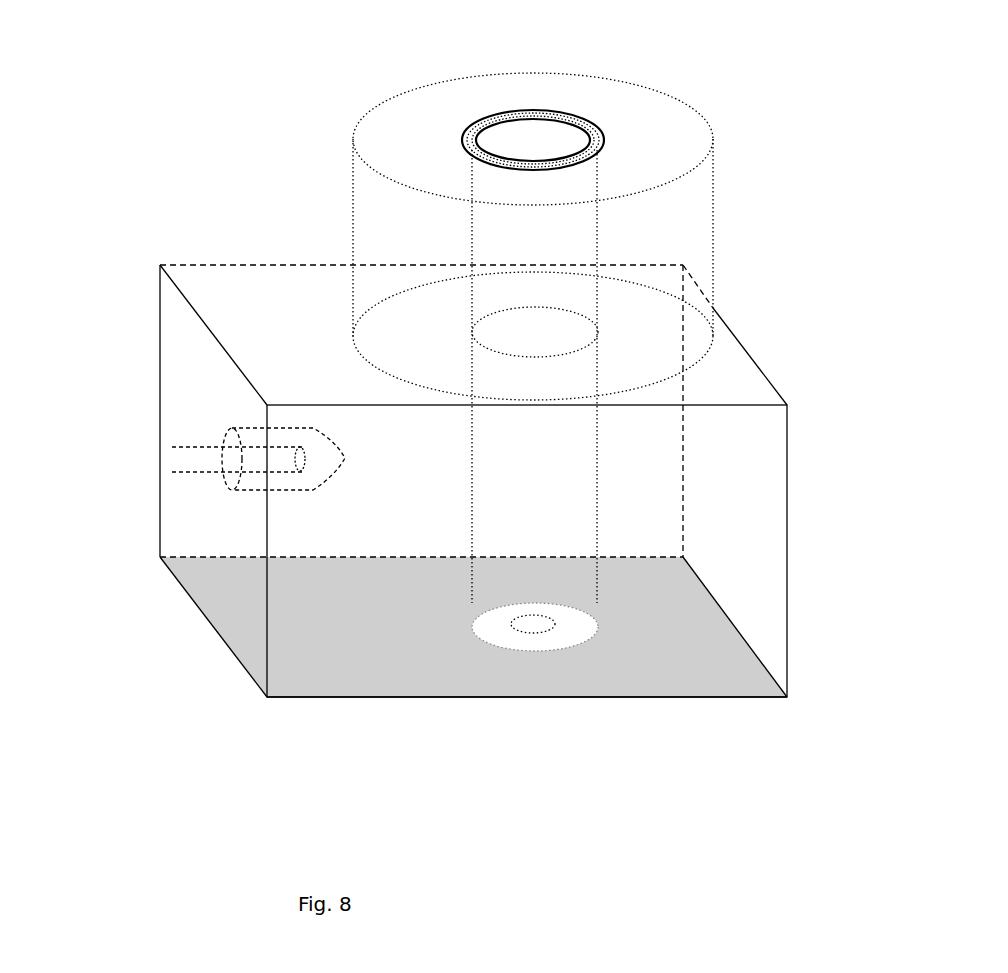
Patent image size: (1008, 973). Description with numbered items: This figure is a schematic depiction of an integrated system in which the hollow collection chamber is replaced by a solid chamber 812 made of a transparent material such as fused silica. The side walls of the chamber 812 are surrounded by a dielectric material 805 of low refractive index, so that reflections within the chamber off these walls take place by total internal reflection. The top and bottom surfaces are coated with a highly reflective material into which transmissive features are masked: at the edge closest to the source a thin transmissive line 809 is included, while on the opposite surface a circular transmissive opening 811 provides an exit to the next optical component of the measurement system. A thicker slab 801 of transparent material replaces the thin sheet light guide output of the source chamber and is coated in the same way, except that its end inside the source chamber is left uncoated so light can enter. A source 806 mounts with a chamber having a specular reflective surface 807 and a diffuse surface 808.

The slab 801 is at (360, 122).
The dielectric material 805 is at (590, 125).
The source 806 is at (240, 447).
The specular reflective surface 807 is at (410, 481).
The diffuse surface 808 is at (424, 627).
The thin transmissive line 809 is at (570, 110).
The circular transmissive opening 811 is at (543, 632).
The solid chamber 812 is at (595, 512).